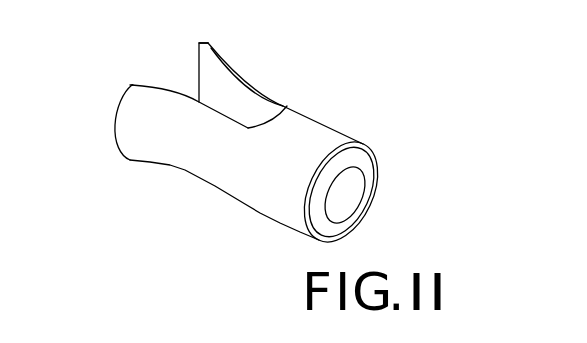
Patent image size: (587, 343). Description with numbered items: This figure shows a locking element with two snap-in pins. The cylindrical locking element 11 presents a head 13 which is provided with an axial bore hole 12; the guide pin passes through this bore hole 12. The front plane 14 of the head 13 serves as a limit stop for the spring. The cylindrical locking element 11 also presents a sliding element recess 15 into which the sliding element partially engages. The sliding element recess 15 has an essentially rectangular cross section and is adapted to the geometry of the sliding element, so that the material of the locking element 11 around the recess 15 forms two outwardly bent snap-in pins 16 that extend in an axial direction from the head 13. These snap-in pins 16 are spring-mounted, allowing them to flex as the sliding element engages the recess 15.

The cylindrical locking element 11 is at (165, 202).
The axial bore hole 12 is at (345, 212).
The head 13 is at (338, 138).
The front plane 14 is at (318, 200).
The sliding element recess 15 is at (183, 78).
The snap-in pins 16 is at (205, 48).